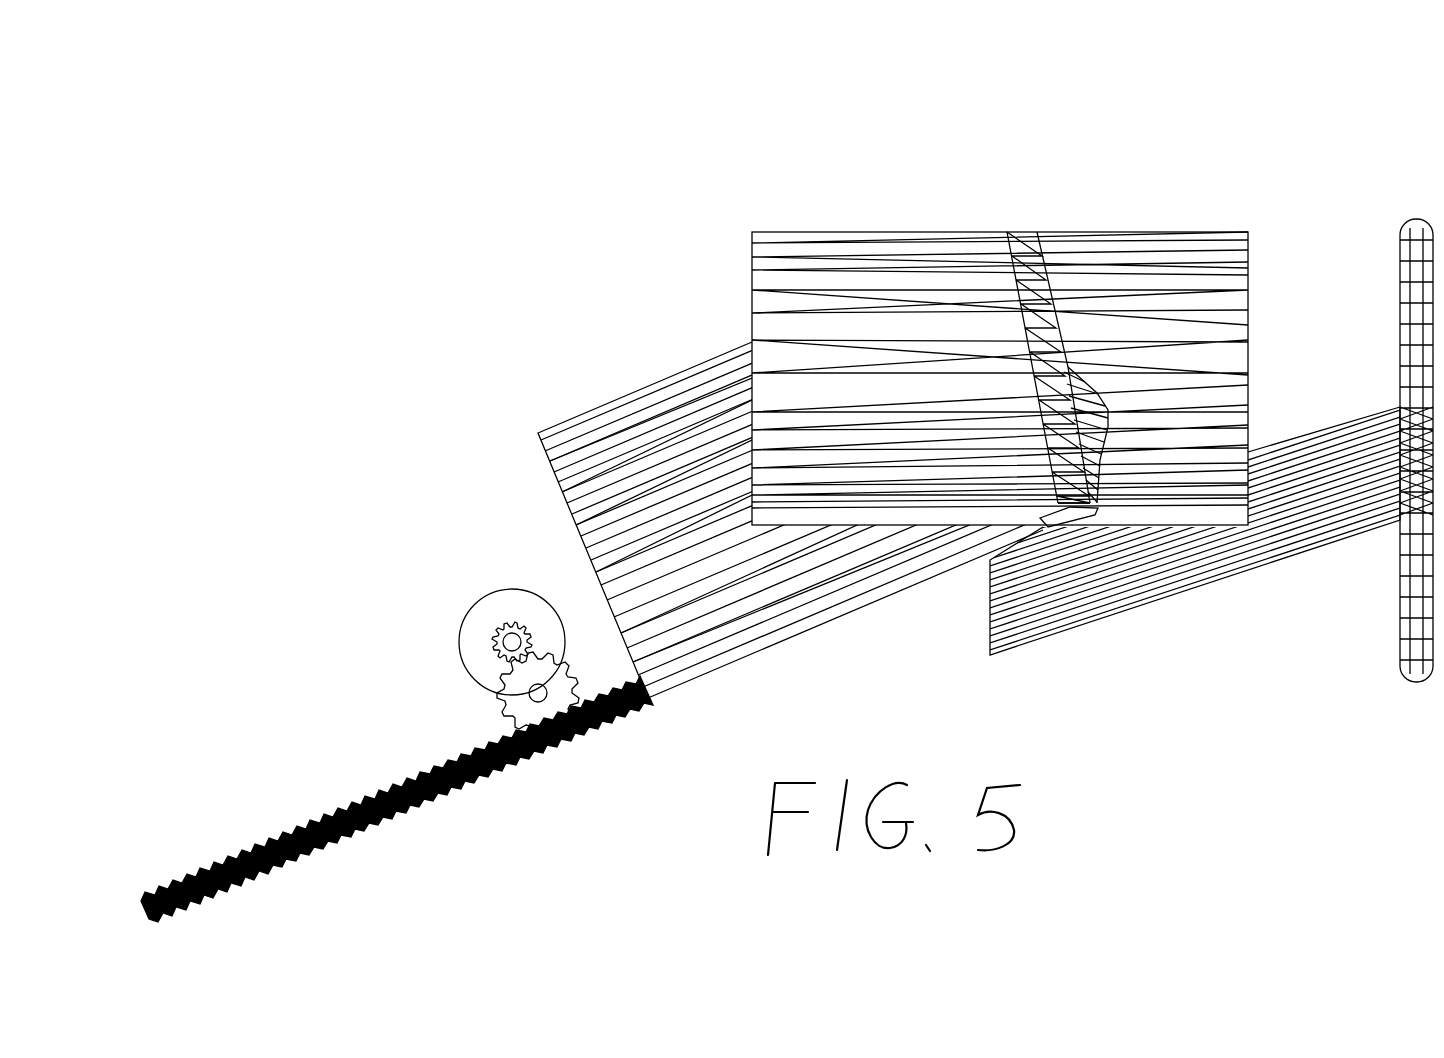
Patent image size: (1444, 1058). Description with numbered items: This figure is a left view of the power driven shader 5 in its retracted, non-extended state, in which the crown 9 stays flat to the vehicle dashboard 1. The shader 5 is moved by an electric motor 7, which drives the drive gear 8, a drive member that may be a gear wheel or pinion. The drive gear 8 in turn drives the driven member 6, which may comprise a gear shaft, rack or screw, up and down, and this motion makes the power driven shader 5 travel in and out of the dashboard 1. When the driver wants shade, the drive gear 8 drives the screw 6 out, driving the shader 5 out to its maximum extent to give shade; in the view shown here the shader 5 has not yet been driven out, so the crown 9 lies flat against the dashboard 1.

The vehicle dashboard 1 is at (1163, 230).
The power driven shader 5 is at (614, 398).
The driven member 6 is at (224, 855).
The electric motor 7 is at (460, 610).
The drive gear 8 is at (500, 711).
The crown 9 is at (1020, 228).